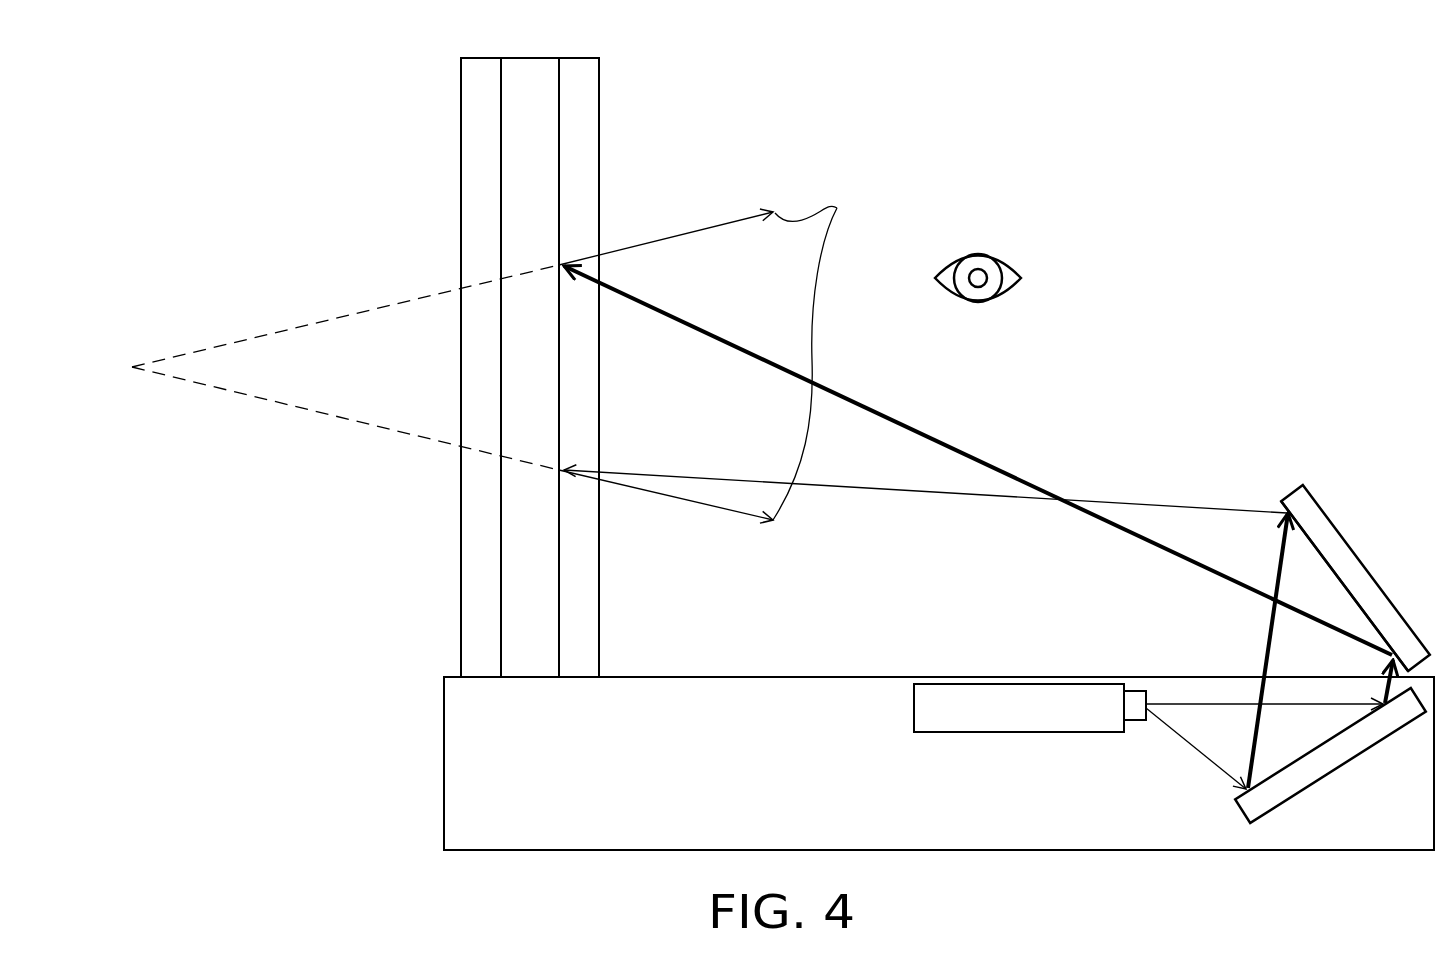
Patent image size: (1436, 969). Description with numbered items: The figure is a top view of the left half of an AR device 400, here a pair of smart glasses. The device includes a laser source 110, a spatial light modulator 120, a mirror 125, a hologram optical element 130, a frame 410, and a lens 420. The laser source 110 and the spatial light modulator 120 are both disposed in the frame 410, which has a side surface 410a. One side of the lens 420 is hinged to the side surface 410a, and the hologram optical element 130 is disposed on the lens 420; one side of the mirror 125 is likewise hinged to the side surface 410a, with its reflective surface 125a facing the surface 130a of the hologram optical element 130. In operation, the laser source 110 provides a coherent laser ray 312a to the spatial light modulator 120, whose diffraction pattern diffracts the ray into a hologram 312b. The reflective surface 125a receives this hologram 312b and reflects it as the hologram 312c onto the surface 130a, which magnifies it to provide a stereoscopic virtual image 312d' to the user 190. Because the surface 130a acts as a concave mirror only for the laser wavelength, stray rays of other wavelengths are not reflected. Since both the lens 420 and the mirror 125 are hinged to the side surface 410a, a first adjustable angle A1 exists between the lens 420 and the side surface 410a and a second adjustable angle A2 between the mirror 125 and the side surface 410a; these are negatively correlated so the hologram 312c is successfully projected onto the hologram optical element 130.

The AR device 400 is at (222, 875).
The lens 420 is at (432, 131).
The hologram optical element 130 is at (531, 58).
The surface of the hologram optical element 130a is at (559, 210).
The frame 410 is at (572, 874).
The side surface of the frame 410a is at (455, 677).
The laser source 110 is at (1020, 733).
The spatial light modulator 120 is at (1383, 741).
The mirror 125 is at (1323, 524).
The reflective surface of the mirror 125a is at (1323, 558).
The coherent laser ray 312a is at (1225, 704).
The hologram 312b is at (1383, 690).
The hologram reflected by the mirror 312c is at (740, 348).
The stereoscopic virtual image 312d' is at (509, 344).
The user 190 is at (978, 253).
The first adjustable angle A1 is at (613, 660).
The second adjustable angle A2 is at (1385, 660).